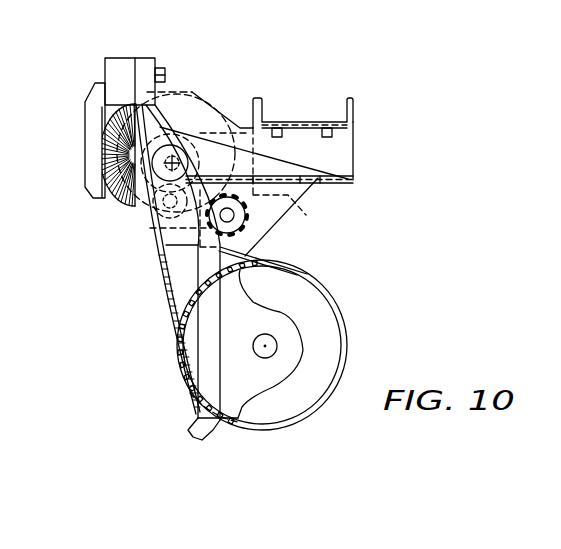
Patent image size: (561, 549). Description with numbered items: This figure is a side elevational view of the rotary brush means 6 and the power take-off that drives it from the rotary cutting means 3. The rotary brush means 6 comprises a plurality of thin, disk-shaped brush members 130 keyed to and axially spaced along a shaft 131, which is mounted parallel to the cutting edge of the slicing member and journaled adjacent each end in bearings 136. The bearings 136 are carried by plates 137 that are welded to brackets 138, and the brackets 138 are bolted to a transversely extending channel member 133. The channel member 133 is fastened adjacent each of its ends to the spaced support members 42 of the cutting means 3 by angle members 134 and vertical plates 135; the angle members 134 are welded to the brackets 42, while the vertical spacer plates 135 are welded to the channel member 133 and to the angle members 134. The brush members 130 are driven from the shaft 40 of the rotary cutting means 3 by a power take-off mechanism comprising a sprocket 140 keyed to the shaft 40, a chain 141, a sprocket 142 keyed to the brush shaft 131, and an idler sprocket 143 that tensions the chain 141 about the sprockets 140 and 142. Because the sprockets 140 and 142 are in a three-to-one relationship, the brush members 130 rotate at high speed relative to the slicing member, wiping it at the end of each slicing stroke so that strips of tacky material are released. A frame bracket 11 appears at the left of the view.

The cutting means 3 is at (348, 338).
The rotary brush means 6 is at (221, 110).
The frame bracket 11 is at (88, 128).
The shaft 40 is at (265, 350).
The support members 42 is at (198, 266).
The brush members 130 is at (117, 196).
The shaft 131 is at (184, 167).
The channel member 133 is at (349, 105).
The angle members 134 is at (312, 180).
The vertical plates 135 is at (341, 153).
The bearings 136 is at (193, 92).
The plates 137 is at (258, 247).
The brackets 138 is at (305, 214).
The sprocket 140 is at (316, 298).
The chain 141 is at (171, 312).
The sprocket 142 is at (153, 214).
The idler sprocket 143 is at (249, 229).